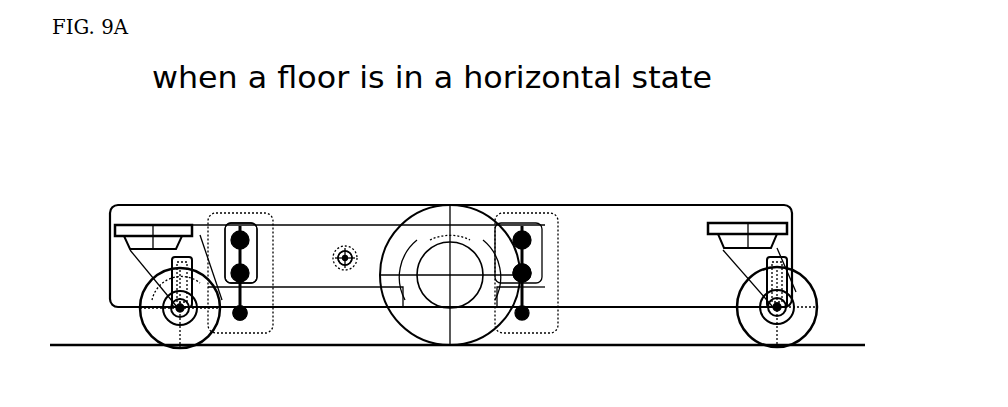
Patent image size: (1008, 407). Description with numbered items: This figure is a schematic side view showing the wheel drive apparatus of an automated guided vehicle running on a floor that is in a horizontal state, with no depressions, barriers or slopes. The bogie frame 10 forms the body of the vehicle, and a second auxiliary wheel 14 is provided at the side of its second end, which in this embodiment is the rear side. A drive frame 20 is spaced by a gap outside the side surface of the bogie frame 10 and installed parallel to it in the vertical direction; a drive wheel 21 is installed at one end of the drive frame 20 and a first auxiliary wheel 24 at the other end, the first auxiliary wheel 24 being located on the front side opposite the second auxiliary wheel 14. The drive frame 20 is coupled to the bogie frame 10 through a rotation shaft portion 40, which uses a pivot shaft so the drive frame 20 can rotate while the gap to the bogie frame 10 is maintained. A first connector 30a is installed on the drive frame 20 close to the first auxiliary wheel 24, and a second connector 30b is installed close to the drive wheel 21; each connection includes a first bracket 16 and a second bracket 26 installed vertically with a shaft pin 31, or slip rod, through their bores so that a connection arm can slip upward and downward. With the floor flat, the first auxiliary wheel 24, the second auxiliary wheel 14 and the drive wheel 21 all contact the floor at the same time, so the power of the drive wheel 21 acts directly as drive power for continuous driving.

The bogie frame 10 is at (680, 222).
The second auxiliary wheel 14 is at (800, 270).
The first bracket 16 is at (234, 223).
The drive frame 20 is at (333, 236).
The drive wheel 21 is at (402, 328).
The first auxiliary wheel 24 is at (156, 315).
The second bracket 26 is at (216, 306).
The first connector 30a is at (208, 222).
The second connector 30b is at (530, 212).
The shaft pin (slip rod) 31 is at (537, 272).
The rotation shaft portion 40 is at (352, 248).